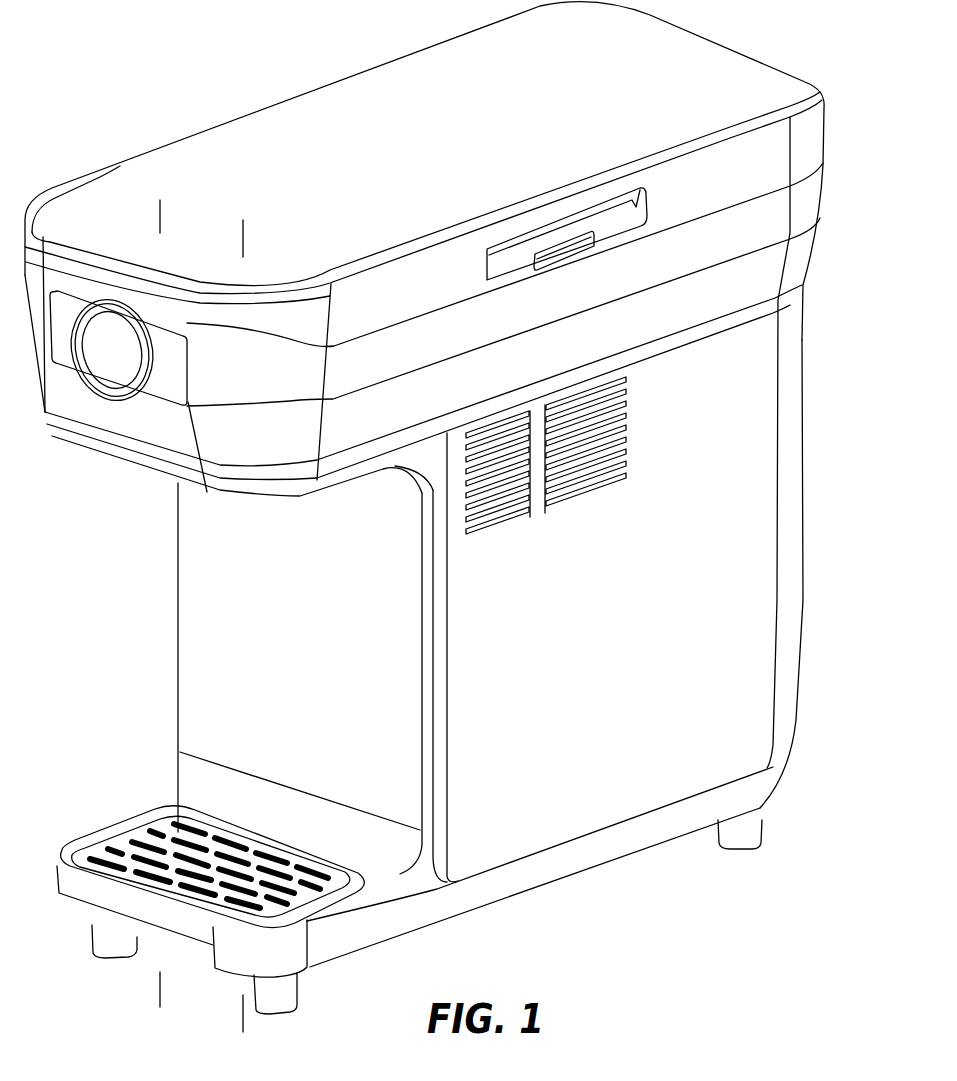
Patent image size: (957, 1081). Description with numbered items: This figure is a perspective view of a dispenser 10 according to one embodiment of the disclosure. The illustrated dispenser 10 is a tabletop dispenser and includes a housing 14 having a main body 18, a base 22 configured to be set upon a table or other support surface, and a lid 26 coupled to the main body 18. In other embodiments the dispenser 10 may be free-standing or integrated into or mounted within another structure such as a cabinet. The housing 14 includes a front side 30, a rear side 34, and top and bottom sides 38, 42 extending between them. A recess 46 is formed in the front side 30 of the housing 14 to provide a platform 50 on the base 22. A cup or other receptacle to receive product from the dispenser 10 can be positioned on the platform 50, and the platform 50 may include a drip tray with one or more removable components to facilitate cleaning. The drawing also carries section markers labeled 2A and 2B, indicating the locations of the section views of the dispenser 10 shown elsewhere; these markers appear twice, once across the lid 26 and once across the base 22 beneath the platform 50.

The dispenser 10 is at (140, 88).
The housing 14 is at (828, 250).
The main body 18 is at (730, 523).
The base 22 is at (613, 835).
The lid 26 is at (310, 117).
The front side 30 is at (163, 942).
The rear side 34 is at (802, 662).
The top side 38 is at (477, 131).
The bottom side 42 is at (513, 902).
The recess 46 is at (213, 627).
The platform 50 is at (113, 840).
The section line 2A is at (165, 218).
The section line 2B is at (248, 240).